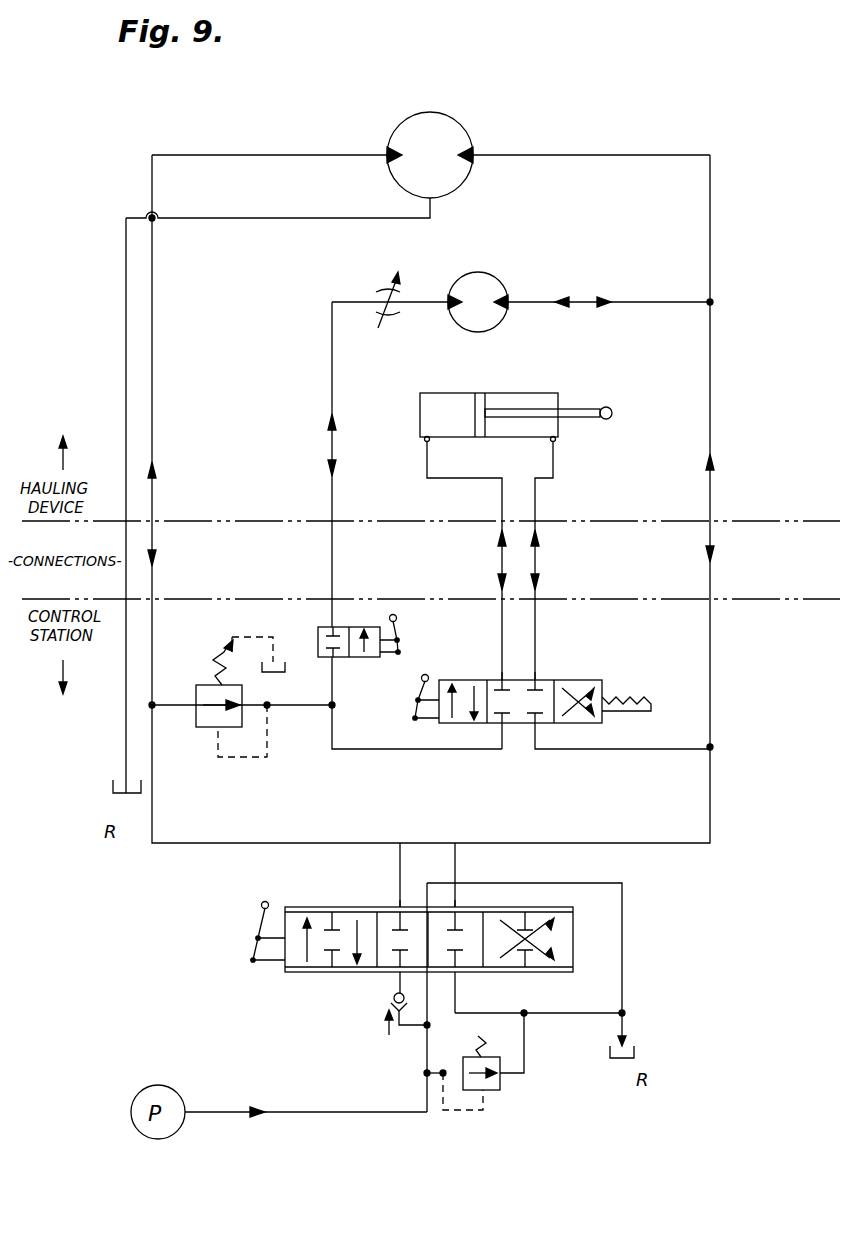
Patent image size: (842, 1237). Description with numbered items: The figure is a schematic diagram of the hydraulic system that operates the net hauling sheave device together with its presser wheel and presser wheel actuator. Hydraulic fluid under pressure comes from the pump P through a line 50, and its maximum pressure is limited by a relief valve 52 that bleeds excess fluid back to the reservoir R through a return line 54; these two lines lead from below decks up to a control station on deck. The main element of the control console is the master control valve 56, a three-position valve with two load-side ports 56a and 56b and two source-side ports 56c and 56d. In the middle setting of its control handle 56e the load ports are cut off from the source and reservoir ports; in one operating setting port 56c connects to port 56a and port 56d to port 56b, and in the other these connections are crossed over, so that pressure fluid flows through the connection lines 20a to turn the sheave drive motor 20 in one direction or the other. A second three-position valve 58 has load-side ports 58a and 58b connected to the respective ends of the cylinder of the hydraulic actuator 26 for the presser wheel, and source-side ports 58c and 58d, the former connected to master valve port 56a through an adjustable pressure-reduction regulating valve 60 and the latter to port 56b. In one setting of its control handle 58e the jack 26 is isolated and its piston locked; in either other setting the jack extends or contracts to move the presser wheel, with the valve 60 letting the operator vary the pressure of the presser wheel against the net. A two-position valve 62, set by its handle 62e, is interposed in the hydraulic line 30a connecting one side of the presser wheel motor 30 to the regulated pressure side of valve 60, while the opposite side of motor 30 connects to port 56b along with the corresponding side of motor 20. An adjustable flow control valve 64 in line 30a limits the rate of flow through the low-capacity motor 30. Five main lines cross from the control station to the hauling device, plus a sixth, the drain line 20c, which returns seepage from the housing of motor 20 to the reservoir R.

The sheave drive motor 20 is at (412, 122).
The connection lines 20a is at (329, 153).
The drain line 20c is at (118, 398).
The presser wheel motor 30 is at (492, 280).
The hydraulic line 30a is at (430, 300).
The adjustable flow control valve 64 is at (390, 318).
The hydraulic actuator 26 is at (520, 392).
The two-position valve 62 is at (356, 658).
The control handle of valve 62 62e is at (400, 620).
The pressure-reduction regulating valve 60 is at (246, 700).
The second three-position valve 58 is at (568, 680).
The load-side port 58a is at (500, 678).
The load-side port 58b is at (538, 678).
The source-side port 58c is at (502, 728).
The source-side port 58d is at (537, 732).
The control handle 58e is at (416, 700).
The master control valve 56 is at (306, 980).
The load-side port 56a is at (398, 905).
The load-side port 56b is at (457, 905).
The source-side port 56c is at (400, 975).
The source-side port 56d is at (457, 975).
The control handle 56e is at (262, 918).
The return line 54 is at (622, 1020).
The relief valve 52 is at (499, 1092).
The pressure line 50 is at (300, 1110).